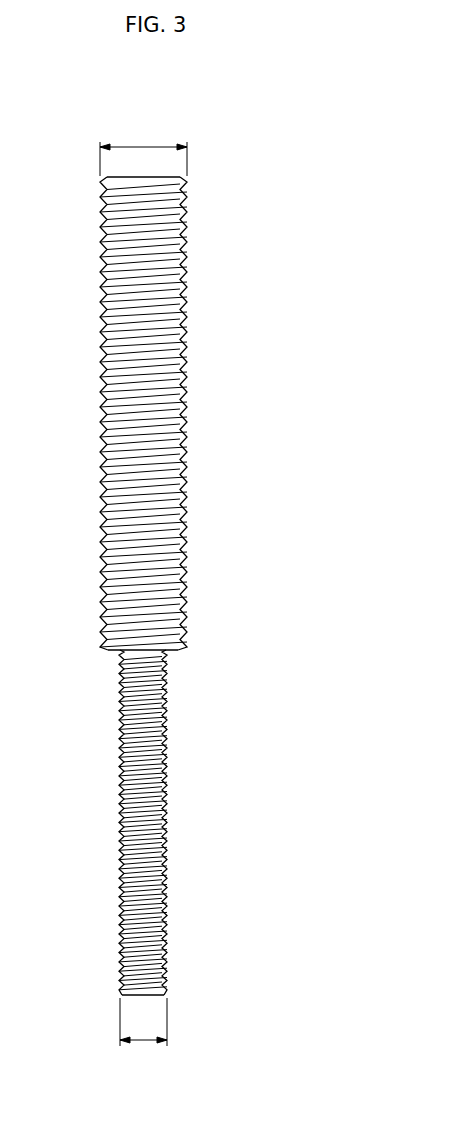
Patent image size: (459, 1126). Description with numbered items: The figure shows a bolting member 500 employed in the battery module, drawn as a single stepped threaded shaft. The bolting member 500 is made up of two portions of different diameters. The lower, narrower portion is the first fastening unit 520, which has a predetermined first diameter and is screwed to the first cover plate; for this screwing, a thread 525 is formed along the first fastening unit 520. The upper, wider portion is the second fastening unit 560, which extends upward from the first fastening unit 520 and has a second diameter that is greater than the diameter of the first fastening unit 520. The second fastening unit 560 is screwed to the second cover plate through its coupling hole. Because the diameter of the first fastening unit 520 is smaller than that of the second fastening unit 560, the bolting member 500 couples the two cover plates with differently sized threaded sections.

The bolting member 500 is at (64, 140).
The second fastening unit 560 is at (212, 351).
The first fastening unit 520 is at (191, 772).
The thread 525 is at (166, 832).